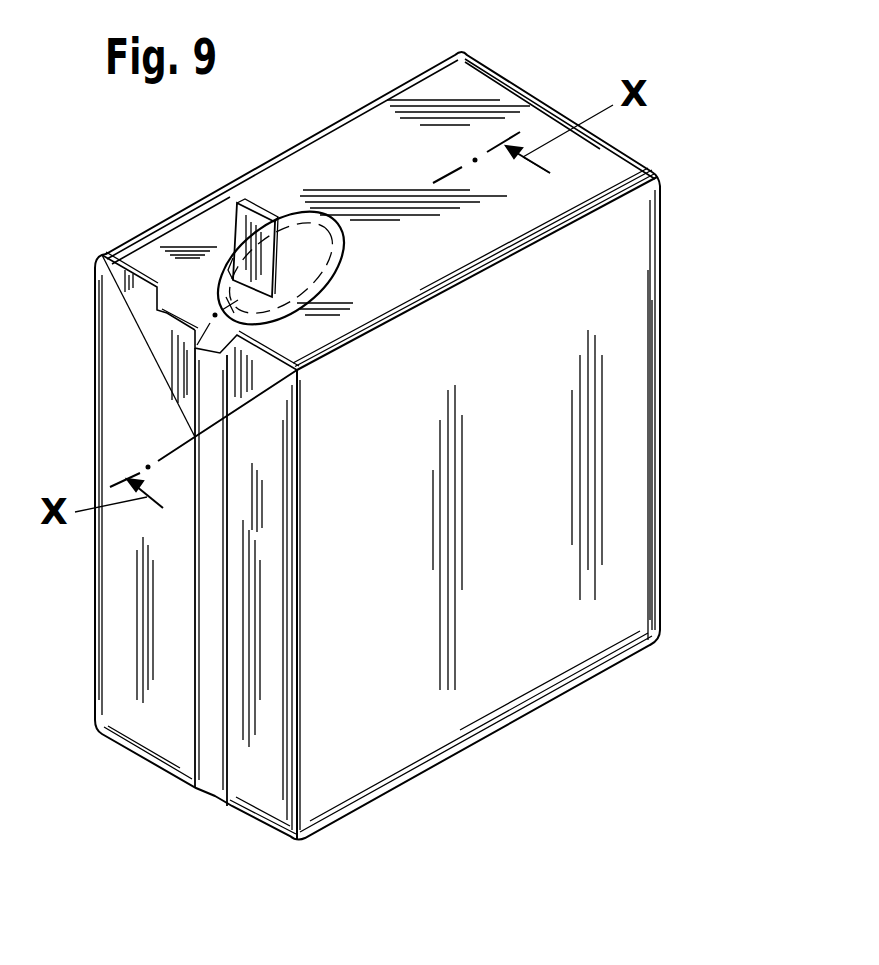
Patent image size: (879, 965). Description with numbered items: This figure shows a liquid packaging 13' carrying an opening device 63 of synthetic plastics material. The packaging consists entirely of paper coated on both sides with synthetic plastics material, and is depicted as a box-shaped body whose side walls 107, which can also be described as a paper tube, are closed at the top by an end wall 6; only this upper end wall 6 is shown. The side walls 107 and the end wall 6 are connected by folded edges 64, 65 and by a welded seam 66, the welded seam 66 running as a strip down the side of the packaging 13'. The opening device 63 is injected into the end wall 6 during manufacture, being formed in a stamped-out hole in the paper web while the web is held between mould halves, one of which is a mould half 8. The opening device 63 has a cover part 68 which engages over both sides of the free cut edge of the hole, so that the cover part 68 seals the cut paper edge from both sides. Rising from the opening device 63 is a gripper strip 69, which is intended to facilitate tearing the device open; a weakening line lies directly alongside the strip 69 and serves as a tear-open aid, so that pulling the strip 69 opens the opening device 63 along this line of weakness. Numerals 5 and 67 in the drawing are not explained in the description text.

The side wall 5 is at (202, 388).
The end wall 6 is at (517, 100).
The mould half 8 is at (168, 312).
The liquid packaging 13' is at (524, 549).
The opening device 63 is at (258, 202).
The folded edge 64 is at (535, 245).
The folded edge 65 is at (134, 272).
The welded seam 66 is at (200, 625).
The groove 67 is at (227, 270).
The cover part 68 is at (315, 245).
The strip 69 is at (243, 227).
The side walls 107 is at (670, 333).